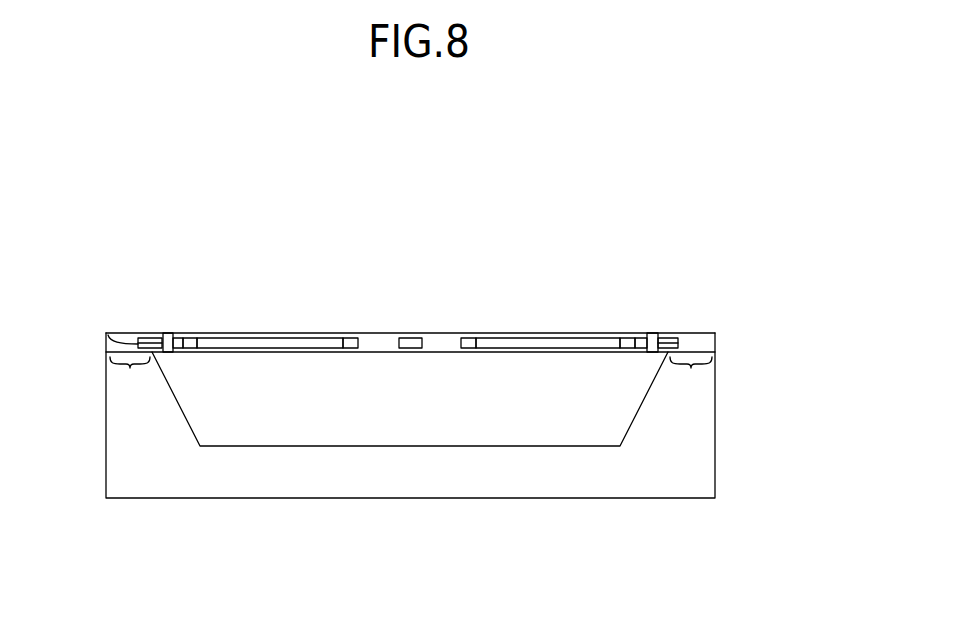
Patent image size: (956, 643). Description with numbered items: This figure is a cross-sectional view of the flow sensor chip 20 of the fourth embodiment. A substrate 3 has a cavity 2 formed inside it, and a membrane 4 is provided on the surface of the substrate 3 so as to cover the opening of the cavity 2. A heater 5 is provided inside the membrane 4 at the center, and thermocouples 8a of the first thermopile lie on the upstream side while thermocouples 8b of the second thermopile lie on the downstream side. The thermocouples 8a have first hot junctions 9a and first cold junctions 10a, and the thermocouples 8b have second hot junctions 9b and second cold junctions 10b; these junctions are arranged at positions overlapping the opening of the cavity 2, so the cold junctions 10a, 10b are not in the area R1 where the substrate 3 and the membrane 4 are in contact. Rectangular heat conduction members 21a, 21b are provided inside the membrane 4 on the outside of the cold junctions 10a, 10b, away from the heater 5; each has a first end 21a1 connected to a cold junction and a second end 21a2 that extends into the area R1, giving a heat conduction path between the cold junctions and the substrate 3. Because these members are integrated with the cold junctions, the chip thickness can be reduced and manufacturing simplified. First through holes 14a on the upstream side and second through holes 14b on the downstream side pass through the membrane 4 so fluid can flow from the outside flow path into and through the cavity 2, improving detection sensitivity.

The cavity 2 is at (450, 430).
The substrate 3 is at (715, 455).
The membrane 4 is at (712, 335).
The heater 5 is at (410, 333).
The thermocouples of the first thermopile 8a is at (287, 333).
The thermocouples of the second thermopile 8b is at (548, 333).
The first hot junctions 9a is at (354, 333).
The second hot junctions 9b is at (471, 333).
The first cold junctions 10a is at (193, 333).
The second cold junctions 10b is at (627, 333).
The first through holes 14a is at (168, 333).
The second through holes 14b is at (655, 333).
The flow sensor chip 20 is at (724, 228).
The first heat conduction member 21a is at (153, 333).
The first end 21a1 is at (187, 341).
The second end 21a2 is at (108, 333).
The second heat conduction member 21b is at (676, 333).
The area where the substrate and the membrane overlap R1 is at (411, 380).